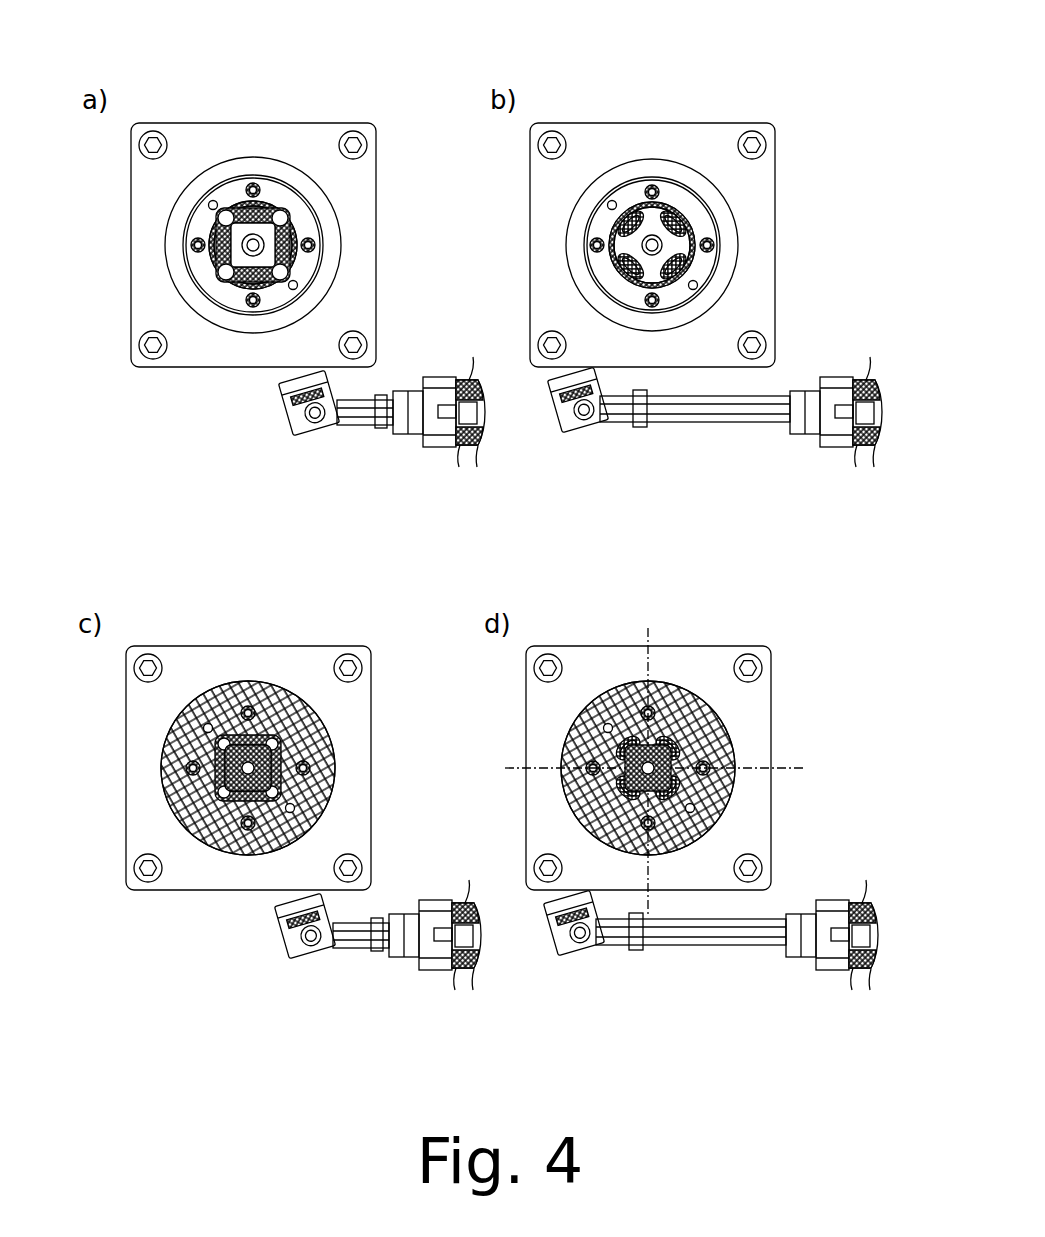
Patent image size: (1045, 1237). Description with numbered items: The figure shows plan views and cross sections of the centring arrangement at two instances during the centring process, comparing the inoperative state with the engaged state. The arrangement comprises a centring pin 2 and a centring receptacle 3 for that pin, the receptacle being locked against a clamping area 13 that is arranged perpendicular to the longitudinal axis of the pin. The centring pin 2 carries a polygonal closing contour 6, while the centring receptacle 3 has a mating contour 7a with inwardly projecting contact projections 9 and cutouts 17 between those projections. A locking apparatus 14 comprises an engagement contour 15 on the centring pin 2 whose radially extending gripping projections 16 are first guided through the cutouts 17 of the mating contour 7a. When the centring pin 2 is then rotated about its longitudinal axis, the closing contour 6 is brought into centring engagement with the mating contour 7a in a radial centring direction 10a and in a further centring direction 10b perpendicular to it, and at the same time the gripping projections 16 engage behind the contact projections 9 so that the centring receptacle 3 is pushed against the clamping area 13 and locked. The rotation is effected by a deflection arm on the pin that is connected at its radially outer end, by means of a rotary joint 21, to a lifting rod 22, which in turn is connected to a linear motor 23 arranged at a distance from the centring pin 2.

In FIG. 4a, the centring pin 2 is at (253, 326).
In FIG. 4b, the centring pin 2 is at (727, 281).
In FIG. 4c, the centring pin 2 is at (335, 791).
In FIG. 4d, the centring pin 2 is at (734, 791).
In FIG. 4a, the centring receptacle 3 is at (243, 167).
In FIG. 4b, the centring receptacle 3 is at (656, 162).
In FIG. 4c, the centring receptacle 3 is at (243, 682).
In FIG. 4d, the centring receptacle 3 is at (662, 685).
In FIG. 4c, the closing contour 6 is at (330, 768).
In FIG. 4d, the closing contour 6 is at (727, 755).
In FIG. 4a, the mating contour 7a is at (315, 171).
In FIG. 4b, the mating contour 7a is at (716, 171).
In FIG. 4c, the mating contour 7a is at (287, 700).
In FIG. 4d, the mating contour 7a is at (682, 702).
In FIG. 4a, the contact projections 9 is at (182, 280).
In FIG. 4b, the contact projections 9 is at (576, 286).
In FIG. 4c, the contact projections 9 is at (197, 869).
In FIG. 4d, the contact projections 9 is at (589, 812).
In FIG. 4d, the centring direction 10a is at (648, 636).
In FIG. 4d, the further centring direction 10b is at (805, 768).
In FIG. 4a, the clamping area 13 is at (360, 205).
In FIG. 4b, the clamping area 13 is at (765, 205).
In FIG. 4c, the clamping area 13 is at (358, 725).
In FIG. 4d, the clamping area 13 is at (758, 723).
In FIG. 4a, the locking apparatus 14 is at (300, 243).
In FIG. 4b, the locking apparatus 14 is at (707, 245).
In FIG. 4a, the engagement contour 15 is at (253, 245).
In FIG. 4b, the engagement contour 15 is at (652, 245).
In FIG. 4c, the engagement contour 15 is at (248, 768).
In FIG. 4d, the engagement contour 15 is at (648, 768).
In FIG. 4a, the gripping projections 16 is at (212, 336).
In FIG. 4b, the gripping projections 16 is at (596, 310).
In FIG. 4a, the cutouts 17 is at (225, 205).
In FIG. 4b, the cutouts 17 is at (630, 200).
In FIG. 4a, the rotary joint 21 is at (290, 436).
In FIG. 4b, the rotary joint 21 is at (563, 432).
In FIG. 4c, the rotary joint 21 is at (286, 959).
In FIG. 4d, the rotary joint 21 is at (559, 955).
In FIG. 4a, the lifting rod 22 is at (358, 427).
In FIG. 4b, the lifting rod 22 is at (755, 412).
In FIG. 4c, the lifting rod 22 is at (354, 950).
In FIG. 4d, the lifting rod 22 is at (751, 935).
In FIG. 4a, the linear motor 23 is at (459, 467).
In FIG. 4b, the linear motor 23 is at (856, 467).
In FIG. 4c, the linear motor 23 is at (455, 990).
In FIG. 4d, the linear motor 23 is at (852, 990).